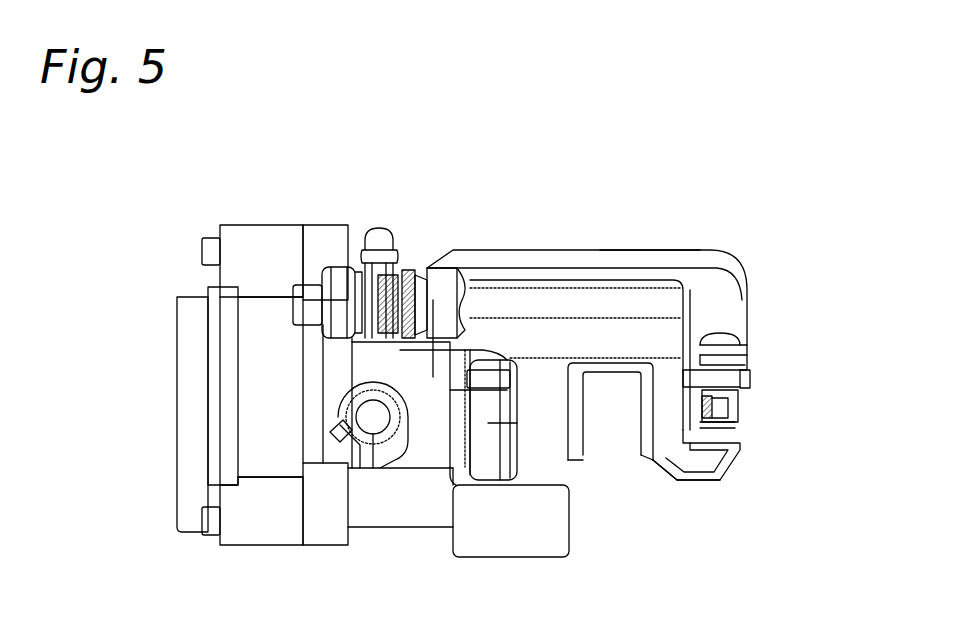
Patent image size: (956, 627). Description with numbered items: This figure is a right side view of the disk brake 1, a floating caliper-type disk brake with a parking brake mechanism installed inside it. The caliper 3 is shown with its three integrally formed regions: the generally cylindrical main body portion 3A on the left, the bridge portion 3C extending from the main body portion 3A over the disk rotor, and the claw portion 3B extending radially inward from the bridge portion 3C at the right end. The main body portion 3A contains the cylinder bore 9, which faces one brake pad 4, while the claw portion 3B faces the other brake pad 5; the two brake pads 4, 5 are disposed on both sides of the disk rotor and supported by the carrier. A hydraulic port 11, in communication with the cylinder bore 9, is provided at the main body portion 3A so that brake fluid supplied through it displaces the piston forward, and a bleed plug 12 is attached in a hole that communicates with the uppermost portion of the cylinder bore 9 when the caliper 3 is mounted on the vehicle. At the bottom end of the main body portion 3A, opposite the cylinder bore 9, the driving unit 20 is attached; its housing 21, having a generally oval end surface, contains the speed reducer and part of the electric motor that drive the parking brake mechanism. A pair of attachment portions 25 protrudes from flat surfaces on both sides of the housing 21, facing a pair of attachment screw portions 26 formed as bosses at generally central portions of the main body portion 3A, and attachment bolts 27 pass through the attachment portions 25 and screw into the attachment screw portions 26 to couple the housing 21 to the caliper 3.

The disk brake 1 is at (758, 194).
The caliper 3 is at (605, 250).
The main body portion 3A is at (435, 300).
The claw portion 3B is at (716, 340).
The bridge portion 3C is at (668, 262).
The brake pad 4 is at (583, 447).
The brake pad 5 is at (641, 460).
The cylinder bore 9 is at (490, 470).
The hydraulic port 11 is at (375, 470).
The bleed plug 12 is at (380, 228).
The driving unit 20 is at (176, 394).
The housing 21 is at (177, 457).
The attachment portions 25 is at (262, 240).
The attachment screw portions 26 is at (322, 240).
The attachment bolts 27 is at (202, 252).